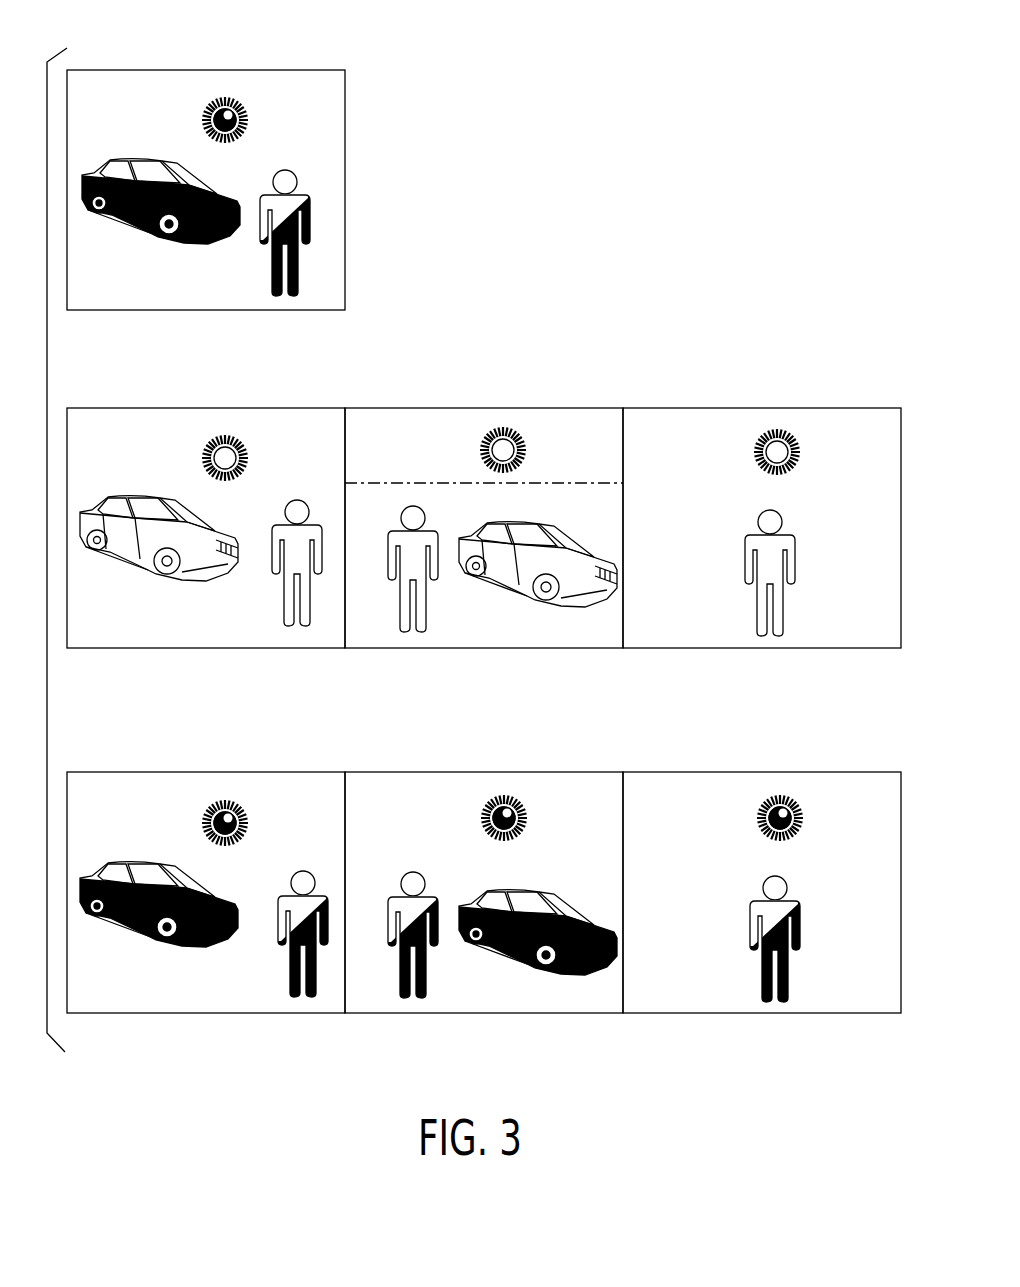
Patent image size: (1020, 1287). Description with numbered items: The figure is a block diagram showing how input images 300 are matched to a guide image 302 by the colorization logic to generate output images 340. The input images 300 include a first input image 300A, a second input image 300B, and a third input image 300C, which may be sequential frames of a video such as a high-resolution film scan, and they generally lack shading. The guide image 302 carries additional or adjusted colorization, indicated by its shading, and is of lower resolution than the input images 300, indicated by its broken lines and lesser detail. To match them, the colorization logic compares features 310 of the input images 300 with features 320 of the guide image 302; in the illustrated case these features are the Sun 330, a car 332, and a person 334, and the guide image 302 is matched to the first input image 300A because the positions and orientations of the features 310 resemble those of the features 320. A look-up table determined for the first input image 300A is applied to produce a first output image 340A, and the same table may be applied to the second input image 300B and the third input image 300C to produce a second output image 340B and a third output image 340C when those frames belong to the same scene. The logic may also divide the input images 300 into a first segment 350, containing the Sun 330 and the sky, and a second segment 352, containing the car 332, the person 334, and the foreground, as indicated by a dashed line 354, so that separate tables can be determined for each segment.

The input images 300 is at (484, 490).
The first input image 300A is at (197, 408).
The second input image 300B is at (475, 408).
The third input image 300C is at (752, 408).
The guide image 302 is at (372, 95).
The features of the input images 310 is at (206, 494).
The features of the guide image 320 is at (130, 93).
The Sun 330 is at (232, 437).
The car 332 is at (130, 553).
The person 334 is at (283, 596).
The output images 340 is at (484, 835).
The first output image 340A is at (197, 772).
The second output image 340B is at (475, 772).
The third output image 340C is at (754, 772).
The first segment 350 is at (484, 514).
The second segment 352 is at (500, 635).
The dashed line 354 is at (552, 483).